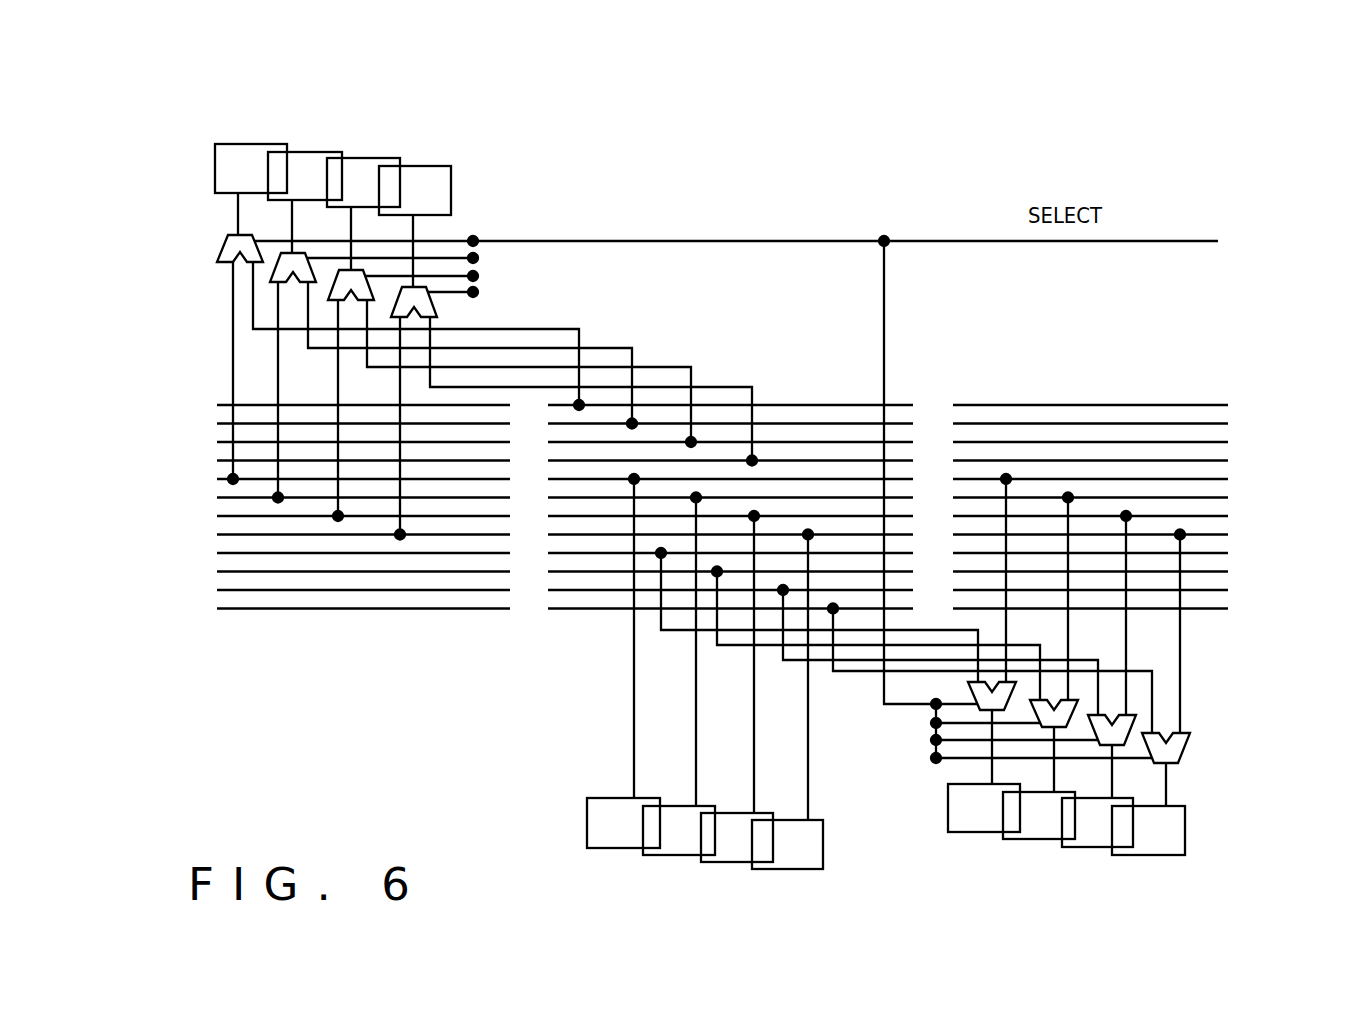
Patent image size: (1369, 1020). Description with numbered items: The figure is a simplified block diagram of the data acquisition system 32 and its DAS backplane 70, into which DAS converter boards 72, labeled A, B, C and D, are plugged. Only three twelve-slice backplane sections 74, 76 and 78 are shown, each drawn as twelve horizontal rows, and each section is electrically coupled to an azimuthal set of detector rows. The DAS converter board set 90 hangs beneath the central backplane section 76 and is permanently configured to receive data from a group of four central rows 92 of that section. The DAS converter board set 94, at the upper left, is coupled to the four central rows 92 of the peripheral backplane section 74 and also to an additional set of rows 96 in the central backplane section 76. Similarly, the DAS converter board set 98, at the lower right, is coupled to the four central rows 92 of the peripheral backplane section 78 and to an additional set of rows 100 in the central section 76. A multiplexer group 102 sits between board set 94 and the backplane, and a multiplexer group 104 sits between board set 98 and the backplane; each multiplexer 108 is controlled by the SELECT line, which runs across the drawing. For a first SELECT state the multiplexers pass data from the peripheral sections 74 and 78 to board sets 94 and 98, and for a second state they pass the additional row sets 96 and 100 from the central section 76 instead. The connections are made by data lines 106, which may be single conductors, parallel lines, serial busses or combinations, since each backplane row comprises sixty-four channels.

The data acquisition system (DAS) 32 is at (440, 752).
The DAS backplane 70 is at (1292, 603).
The DAS converter boards 72 is at (410, 166).
The backplane section 74 is at (405, 612).
The central backplane section 76 is at (782, 390).
The backplane section 78 is at (1091, 397).
The DAS converter board set 90 is at (825, 895).
The group of four central rows 92 is at (1232, 466).
The DAS converter board set 94 is at (472, 110).
The additional set of rows 96 is at (1232, 405).
The DAS converter board set 98 is at (1185, 880).
The additional set of rows 100 is at (1232, 549).
The multiplexer group 102 is at (217, 232).
The multiplexer group 104 is at (1195, 665).
The data lines 106 is at (316, 423).
The multiplexer 108 is at (265, 266).